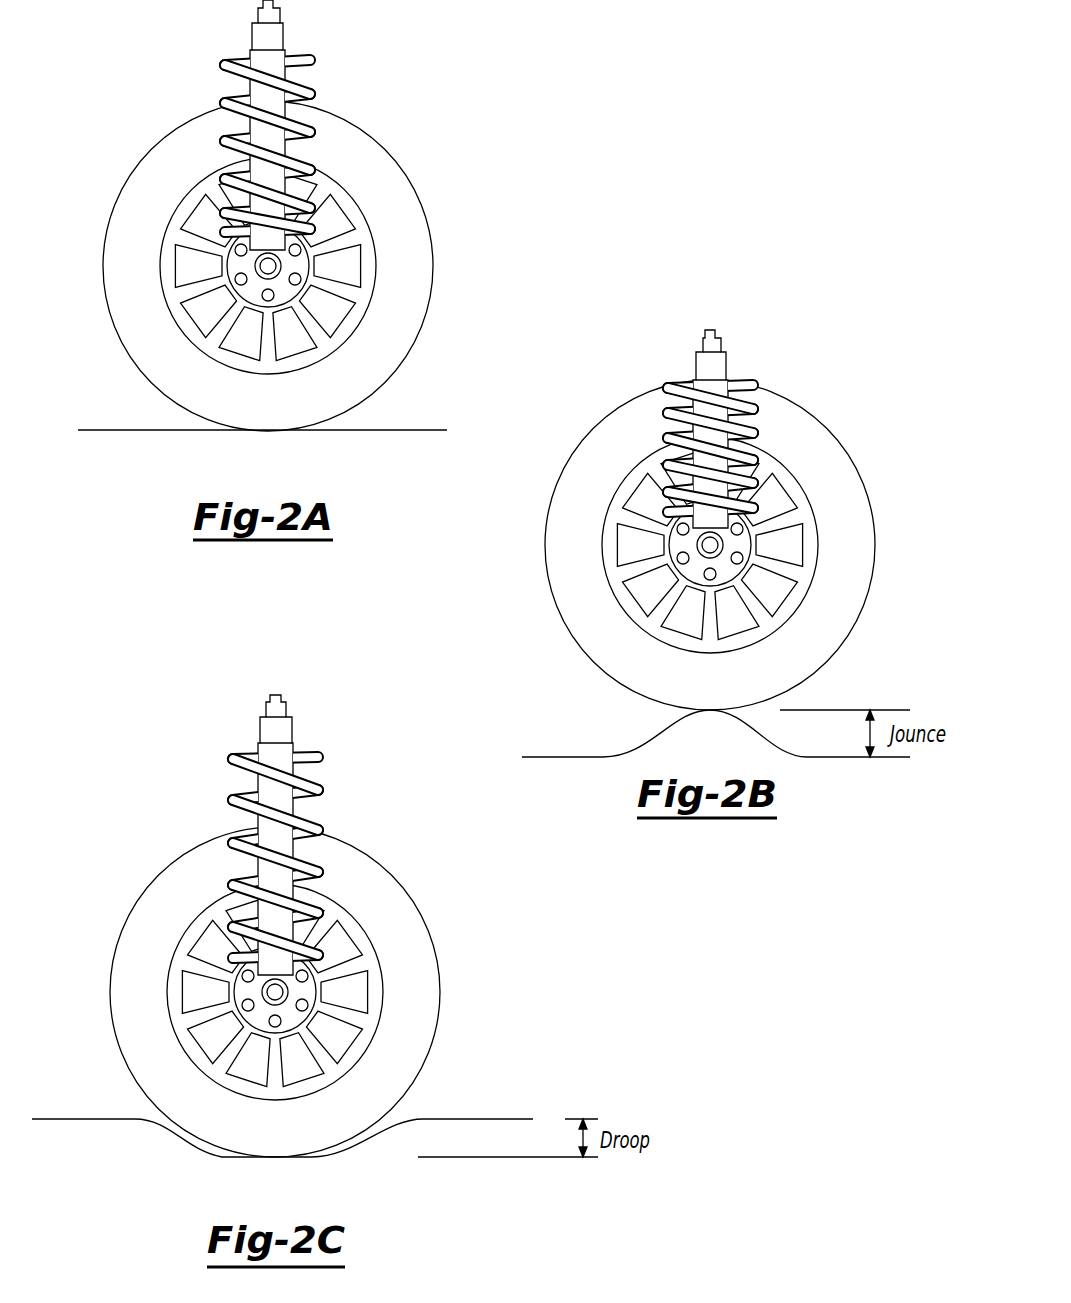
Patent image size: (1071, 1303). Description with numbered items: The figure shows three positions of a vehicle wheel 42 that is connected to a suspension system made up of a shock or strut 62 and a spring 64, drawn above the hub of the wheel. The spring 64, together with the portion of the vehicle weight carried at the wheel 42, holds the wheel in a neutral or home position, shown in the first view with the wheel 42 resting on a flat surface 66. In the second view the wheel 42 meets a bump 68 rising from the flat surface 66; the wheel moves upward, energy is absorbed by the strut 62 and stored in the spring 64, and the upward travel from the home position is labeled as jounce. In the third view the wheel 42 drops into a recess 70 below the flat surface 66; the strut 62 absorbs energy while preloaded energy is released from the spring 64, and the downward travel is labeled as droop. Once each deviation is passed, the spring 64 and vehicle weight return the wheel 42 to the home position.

In FIG. 2A, the wheel 42 is at (422, 198).
In FIG. 2B, the wheel 42 is at (545, 543).
In FIG. 2C, the wheel 42 is at (425, 922).
In FIG. 2A, the strut 62 is at (277, 135).
In FIG. 2B, the strut 62 is at (725, 390).
In FIG. 2C, the strut 62 is at (287, 758).
In FIG. 2A, the spring 64 is at (223, 62).
In FIG. 2B, the spring 64 is at (757, 435).
In FIG. 2C, the spring 64 is at (233, 798).
In FIG. 2A, the flat surface 66 is at (413, 430).
In FIG. 2B, the flat surface 66 is at (563, 757).
In FIG. 2C, the flat surface 66 is at (482, 1119).
In FIG. 2B, the bump 68 is at (780, 732).
In FIG. 2C, the recess 70 is at (167, 1128).